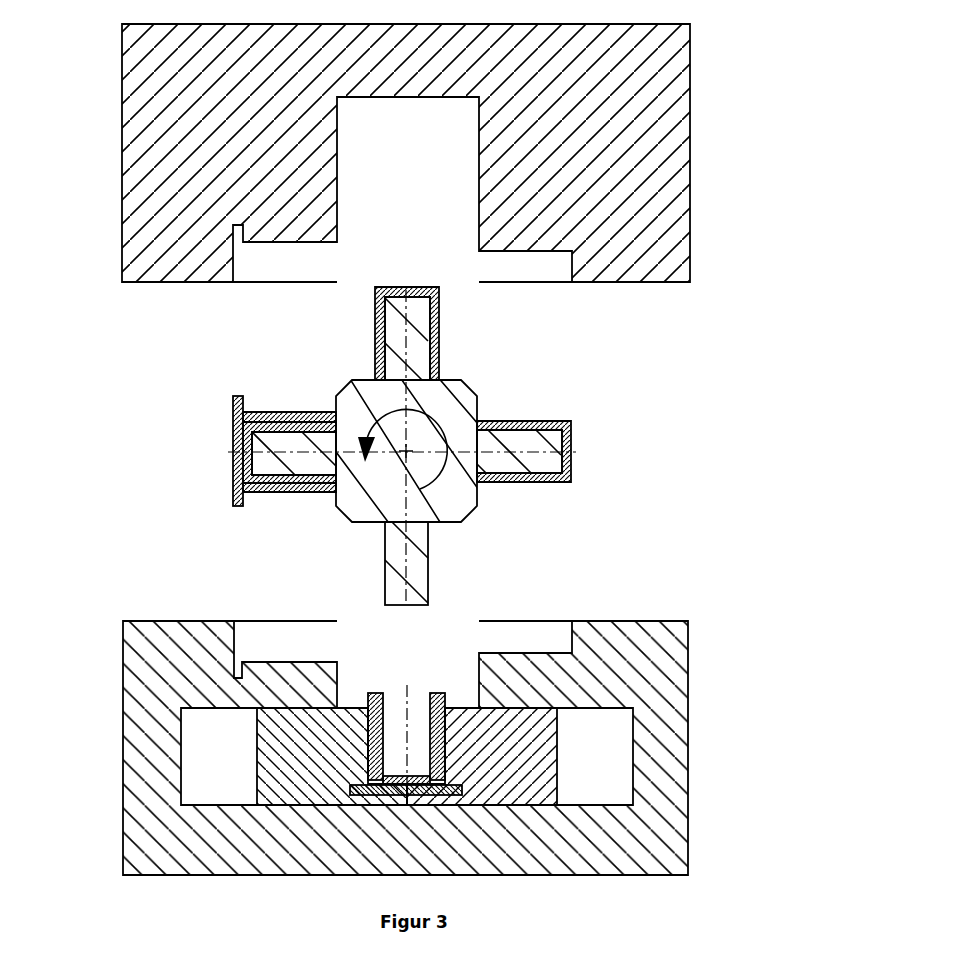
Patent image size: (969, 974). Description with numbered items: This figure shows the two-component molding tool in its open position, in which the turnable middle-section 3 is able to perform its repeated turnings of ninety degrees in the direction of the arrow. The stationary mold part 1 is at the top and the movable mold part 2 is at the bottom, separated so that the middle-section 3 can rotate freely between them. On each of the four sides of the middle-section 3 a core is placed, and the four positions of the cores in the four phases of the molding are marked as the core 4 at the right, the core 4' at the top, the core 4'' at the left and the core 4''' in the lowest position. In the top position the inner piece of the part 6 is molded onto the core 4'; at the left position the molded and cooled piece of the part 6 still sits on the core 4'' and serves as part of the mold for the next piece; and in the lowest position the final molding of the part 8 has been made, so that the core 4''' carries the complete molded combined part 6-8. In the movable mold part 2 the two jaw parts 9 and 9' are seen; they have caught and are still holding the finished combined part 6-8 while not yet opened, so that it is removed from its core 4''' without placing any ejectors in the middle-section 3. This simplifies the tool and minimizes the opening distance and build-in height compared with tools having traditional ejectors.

The stationary mold part 1 is at (183, 150).
The movable mold part 2 is at (172, 670).
The turnable middle-section 3 is at (455, 412).
The core 4 is at (660, 434).
The core 4' is at (242, 338).
The core 4'' is at (195, 490).
The core 4''' is at (622, 571).
The inner piece of the part 6 is at (375, 322).
The part 8 is at (236, 445).
The jaw part 9 is at (229, 748).
The jaw part 9' is at (628, 756).
The combined part 6-8 is at (372, 781).